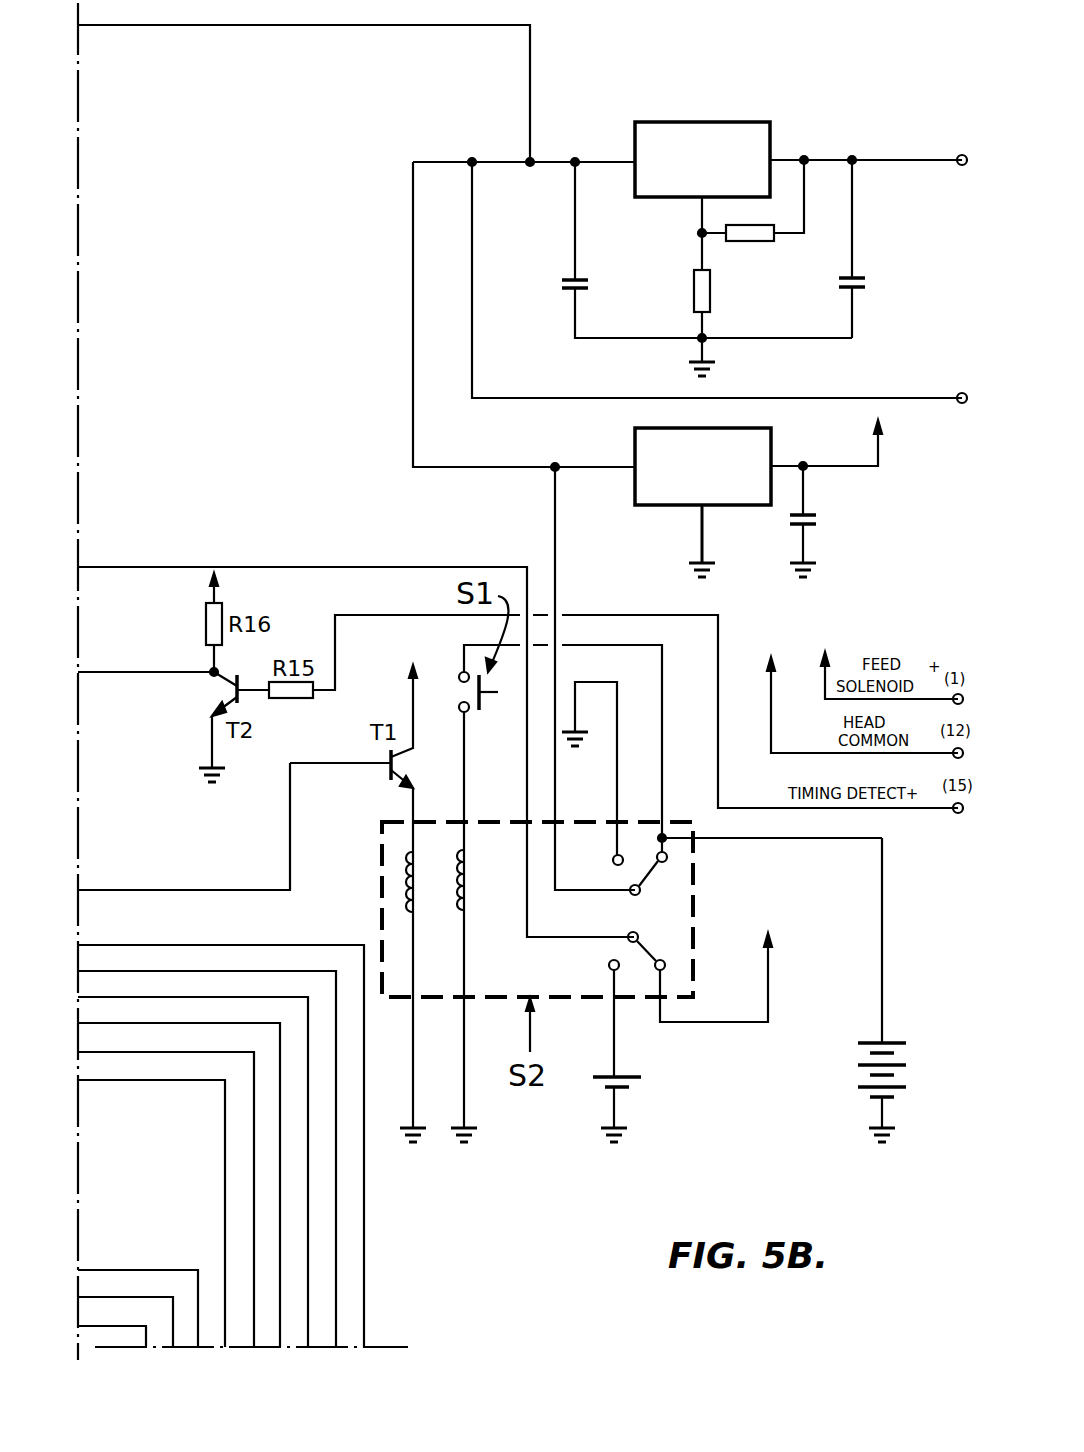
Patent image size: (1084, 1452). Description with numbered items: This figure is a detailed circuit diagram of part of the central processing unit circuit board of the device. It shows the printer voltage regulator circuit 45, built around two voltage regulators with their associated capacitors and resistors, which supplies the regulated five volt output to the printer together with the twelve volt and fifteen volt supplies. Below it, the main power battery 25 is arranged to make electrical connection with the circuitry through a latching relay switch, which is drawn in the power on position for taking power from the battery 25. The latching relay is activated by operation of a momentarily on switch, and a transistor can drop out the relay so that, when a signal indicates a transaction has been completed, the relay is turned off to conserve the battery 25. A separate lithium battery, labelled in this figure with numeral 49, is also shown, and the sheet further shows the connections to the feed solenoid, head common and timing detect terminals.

The printer voltage regulator circuit 45 is at (762, 110).
The EEPROM chip 49 is at (648, 1096).
The main power battery 25 is at (846, 1070).